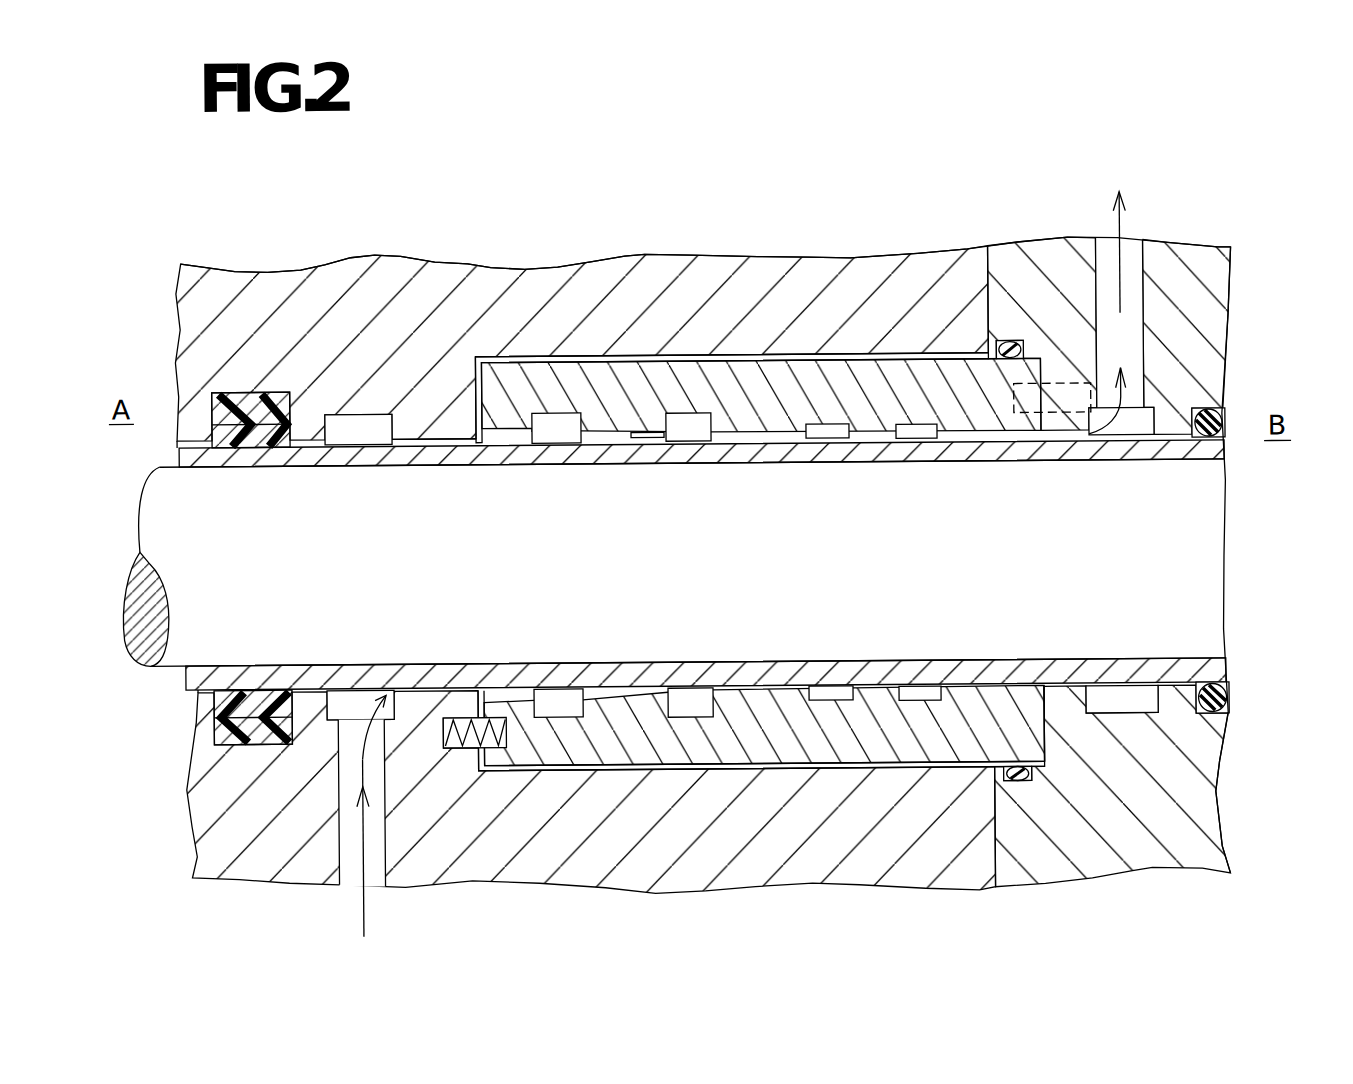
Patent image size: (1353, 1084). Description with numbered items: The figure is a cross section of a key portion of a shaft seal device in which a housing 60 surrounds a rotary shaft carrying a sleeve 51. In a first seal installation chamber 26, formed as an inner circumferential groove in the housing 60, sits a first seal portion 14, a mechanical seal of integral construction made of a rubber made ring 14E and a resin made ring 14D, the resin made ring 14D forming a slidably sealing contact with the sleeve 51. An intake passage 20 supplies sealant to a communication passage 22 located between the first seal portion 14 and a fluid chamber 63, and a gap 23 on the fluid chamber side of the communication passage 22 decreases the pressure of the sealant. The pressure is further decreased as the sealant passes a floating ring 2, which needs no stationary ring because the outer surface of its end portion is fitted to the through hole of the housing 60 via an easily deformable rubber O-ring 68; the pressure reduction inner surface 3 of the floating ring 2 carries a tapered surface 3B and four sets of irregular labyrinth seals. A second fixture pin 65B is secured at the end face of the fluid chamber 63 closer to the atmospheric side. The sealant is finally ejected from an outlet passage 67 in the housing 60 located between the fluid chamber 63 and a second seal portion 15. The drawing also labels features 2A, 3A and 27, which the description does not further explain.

The first seal portion 14 is at (259, 359).
The rubber made ring 14E is at (283, 394).
The resin made ring 14D is at (255, 434).
The housing 60 is at (597, 289).
The fluid chamber 63 is at (740, 357).
The floating ring 2 is at (848, 384).
The bushing flange 2A is at (1046, 364).
The O-ring 68 is at (1012, 348).
The outlet passage 67 is at (1138, 262).
The O-ring 27 is at (1200, 414).
The second seal portion 15 is at (1221, 427).
The sleeve 51 is at (303, 452).
The communication passage 22 is at (367, 430).
The gap 23 is at (438, 438).
The projection 3A is at (557, 429).
The tapered surface 3B is at (633, 435).
The pressure reduction inner surface 3 is at (960, 447).
The second fixture pin 65B is at (1030, 406).
The first seal installation chamber 26 is at (235, 740).
The intake passage 20 is at (345, 876).